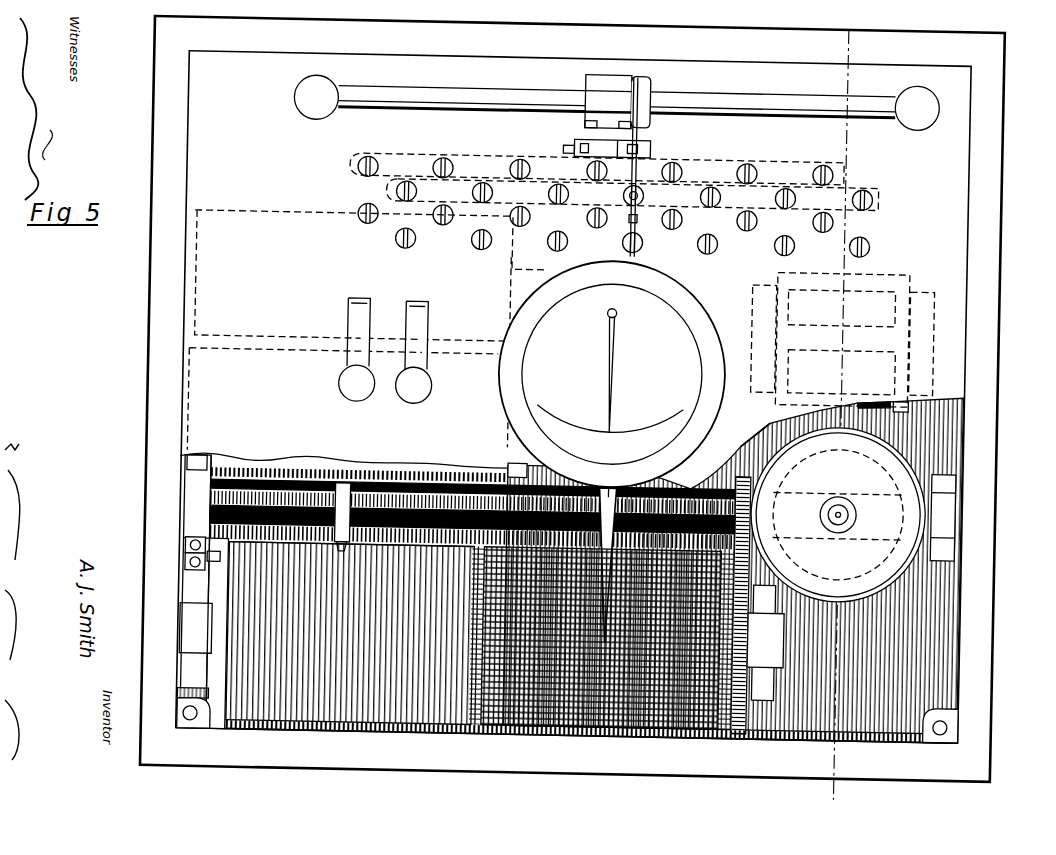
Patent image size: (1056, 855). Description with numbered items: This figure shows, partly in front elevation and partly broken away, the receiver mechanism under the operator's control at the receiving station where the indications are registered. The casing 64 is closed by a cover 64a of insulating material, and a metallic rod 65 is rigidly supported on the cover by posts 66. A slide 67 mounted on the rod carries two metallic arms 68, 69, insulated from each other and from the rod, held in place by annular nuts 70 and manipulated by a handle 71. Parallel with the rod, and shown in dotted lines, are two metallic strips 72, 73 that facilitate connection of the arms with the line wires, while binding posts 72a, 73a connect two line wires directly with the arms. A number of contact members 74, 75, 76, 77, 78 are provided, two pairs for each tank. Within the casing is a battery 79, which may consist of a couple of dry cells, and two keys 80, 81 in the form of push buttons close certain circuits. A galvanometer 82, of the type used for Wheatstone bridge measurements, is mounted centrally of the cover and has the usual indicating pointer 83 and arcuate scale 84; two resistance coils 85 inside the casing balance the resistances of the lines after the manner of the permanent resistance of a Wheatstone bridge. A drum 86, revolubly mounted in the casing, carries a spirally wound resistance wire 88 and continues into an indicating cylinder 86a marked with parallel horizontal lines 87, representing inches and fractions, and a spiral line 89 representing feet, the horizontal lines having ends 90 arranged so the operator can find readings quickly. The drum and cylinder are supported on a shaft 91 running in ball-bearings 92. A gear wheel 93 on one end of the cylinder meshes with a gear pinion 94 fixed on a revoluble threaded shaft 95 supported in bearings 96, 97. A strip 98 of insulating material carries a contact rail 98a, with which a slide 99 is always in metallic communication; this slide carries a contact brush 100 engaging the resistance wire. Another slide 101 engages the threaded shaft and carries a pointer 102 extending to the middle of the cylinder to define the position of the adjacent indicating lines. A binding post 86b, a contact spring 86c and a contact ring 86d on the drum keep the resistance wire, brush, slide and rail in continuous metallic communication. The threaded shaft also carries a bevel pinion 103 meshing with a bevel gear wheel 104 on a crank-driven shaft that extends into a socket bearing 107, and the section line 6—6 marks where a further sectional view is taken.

The line 6— 6 is at (889, 783).
The casing 64 is at (994, 463).
The cover 64a is at (950, 224).
The metallic rod 65 is at (787, 82).
The posts 66 is at (944, 111).
The slide 67 is at (618, 102).
The metallic arm 68 is at (643, 212).
The metallic arm 69 is at (630, 190).
The annular nuts 70 is at (588, 117).
The handle 71 is at (623, 166).
The metallic strip 72 is at (360, 150).
The binding post 72a is at (653, 139).
The metallic strip 73 is at (882, 185).
The binding post 73a is at (555, 146).
The contact member 74 is at (780, 186).
The contact member 75 is at (722, 234).
The contact member 76 is at (685, 163).
The contact member 77 is at (647, 187).
The contact member 78 is at (590, 164).
The battery 79 is at (243, 209).
The key 80 is at (414, 352).
The key 81 is at (357, 350).
The galvanometer 82 is at (612, 374).
The indicating pointer 83 is at (622, 357).
The arcuate scale 84 is at (590, 418).
The resistance coils 85 is at (806, 307).
The drum 86 is at (423, 710).
The indicating cylinder 86a is at (535, 718).
The binding post 86b is at (196, 564).
The contact spring 86c is at (196, 546).
The contact ring 86d is at (237, 730).
The horizontal lines 87 is at (493, 625).
The resistance wire 88 is at (364, 706).
The spiral line 89 is at (574, 732).
The ends 90 is at (484, 727).
The shaft 91 is at (184, 641).
The ball-bearings 92 is at (765, 643).
The gear wheel 93 is at (771, 728).
The gear pinion 94 is at (754, 433).
The threaded shaft 95 is at (320, 482).
The bearing 96 is at (200, 496).
The bearing 97 is at (739, 447).
The strip of insulating material 98 is at (497, 474).
The contact rail 98a is at (434, 475).
The slide 99 is at (352, 481).
The contact brush 100 is at (279, 476).
The slide 101 is at (606, 480).
The pointer 102 is at (627, 729).
The bevel pinion 103 is at (788, 478).
The bevel gear wheel 104 is at (895, 531).
The socket bearing 107 is at (838, 517).